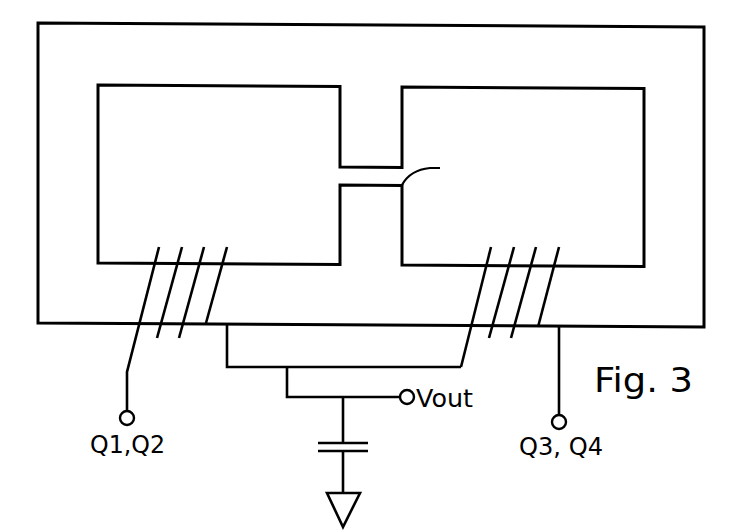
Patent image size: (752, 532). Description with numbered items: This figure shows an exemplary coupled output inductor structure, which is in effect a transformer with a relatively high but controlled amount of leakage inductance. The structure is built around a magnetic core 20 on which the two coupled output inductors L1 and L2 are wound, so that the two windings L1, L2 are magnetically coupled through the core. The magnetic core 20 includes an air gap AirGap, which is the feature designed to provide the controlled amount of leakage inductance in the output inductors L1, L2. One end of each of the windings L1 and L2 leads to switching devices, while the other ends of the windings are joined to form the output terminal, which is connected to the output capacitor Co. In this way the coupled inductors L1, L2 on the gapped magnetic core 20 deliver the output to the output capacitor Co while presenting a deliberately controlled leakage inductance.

The magnetic core 20 is at (371, 175).
The output inductor L1 is at (203, 264).
The output inductor L2 is at (539, 265).
The output capacitor Co is at (335, 443).
The air gap AirGap is at (467, 170).